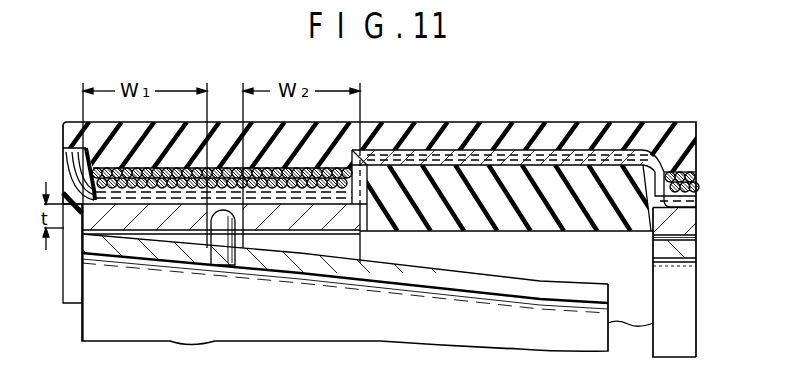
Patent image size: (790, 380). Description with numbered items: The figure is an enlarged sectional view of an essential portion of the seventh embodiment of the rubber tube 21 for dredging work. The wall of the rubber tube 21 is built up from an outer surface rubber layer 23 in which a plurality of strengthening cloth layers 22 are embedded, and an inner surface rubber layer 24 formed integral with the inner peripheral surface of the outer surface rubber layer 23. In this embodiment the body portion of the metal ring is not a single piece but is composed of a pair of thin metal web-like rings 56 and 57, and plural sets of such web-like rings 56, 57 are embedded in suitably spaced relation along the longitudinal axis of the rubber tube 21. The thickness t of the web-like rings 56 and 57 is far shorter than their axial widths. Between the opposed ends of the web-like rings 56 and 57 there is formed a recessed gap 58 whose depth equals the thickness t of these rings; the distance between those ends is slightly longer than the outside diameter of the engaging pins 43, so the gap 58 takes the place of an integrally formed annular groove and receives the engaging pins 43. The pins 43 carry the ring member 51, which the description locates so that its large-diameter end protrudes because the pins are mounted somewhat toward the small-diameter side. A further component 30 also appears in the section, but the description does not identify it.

The rubber tube 21 is at (484, 120).
The strengthening cloth layers 22 is at (600, 153).
The outer surface rubber layer 23 is at (426, 134).
The inner surface rubber layer 24 is at (540, 178).
The coil windings 30 is at (677, 177).
The engaging pins 43 is at (222, 250).
The ring member 51 is at (414, 278).
The web-like ring 56 is at (158, 270).
The web-like ring 57 is at (340, 225).
The recessed gap 58 is at (205, 208).